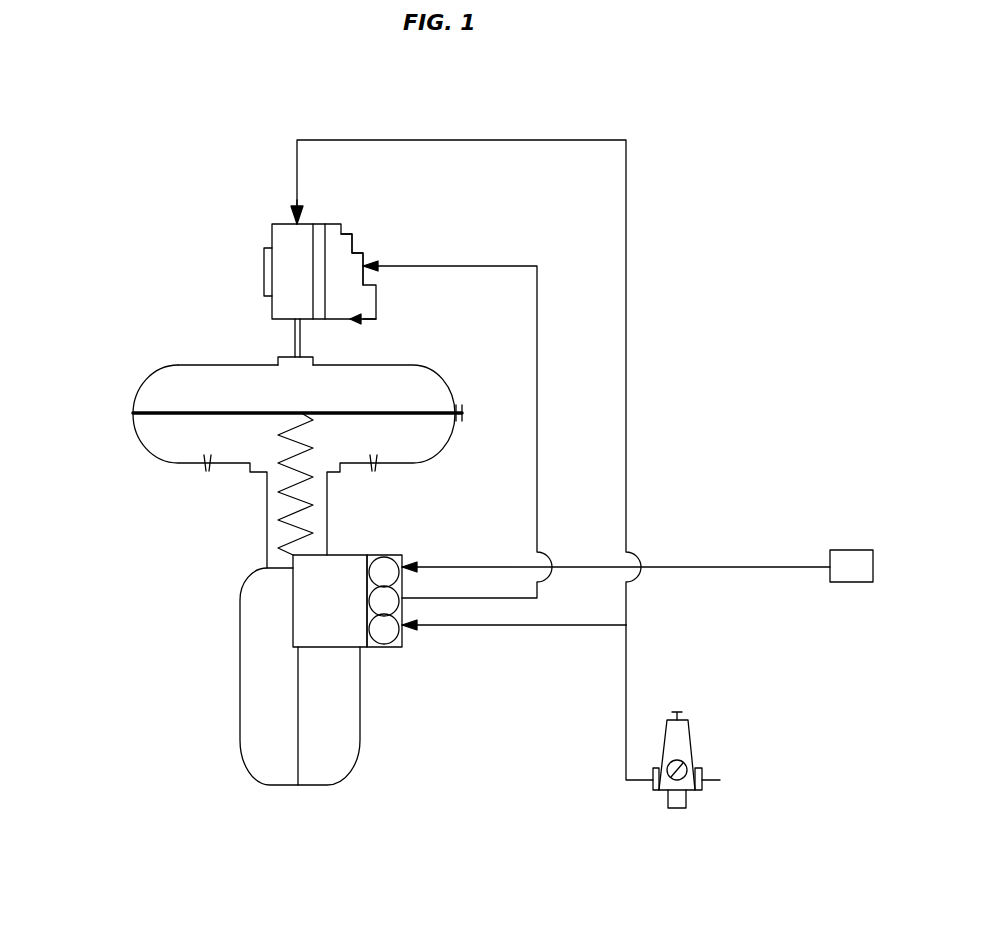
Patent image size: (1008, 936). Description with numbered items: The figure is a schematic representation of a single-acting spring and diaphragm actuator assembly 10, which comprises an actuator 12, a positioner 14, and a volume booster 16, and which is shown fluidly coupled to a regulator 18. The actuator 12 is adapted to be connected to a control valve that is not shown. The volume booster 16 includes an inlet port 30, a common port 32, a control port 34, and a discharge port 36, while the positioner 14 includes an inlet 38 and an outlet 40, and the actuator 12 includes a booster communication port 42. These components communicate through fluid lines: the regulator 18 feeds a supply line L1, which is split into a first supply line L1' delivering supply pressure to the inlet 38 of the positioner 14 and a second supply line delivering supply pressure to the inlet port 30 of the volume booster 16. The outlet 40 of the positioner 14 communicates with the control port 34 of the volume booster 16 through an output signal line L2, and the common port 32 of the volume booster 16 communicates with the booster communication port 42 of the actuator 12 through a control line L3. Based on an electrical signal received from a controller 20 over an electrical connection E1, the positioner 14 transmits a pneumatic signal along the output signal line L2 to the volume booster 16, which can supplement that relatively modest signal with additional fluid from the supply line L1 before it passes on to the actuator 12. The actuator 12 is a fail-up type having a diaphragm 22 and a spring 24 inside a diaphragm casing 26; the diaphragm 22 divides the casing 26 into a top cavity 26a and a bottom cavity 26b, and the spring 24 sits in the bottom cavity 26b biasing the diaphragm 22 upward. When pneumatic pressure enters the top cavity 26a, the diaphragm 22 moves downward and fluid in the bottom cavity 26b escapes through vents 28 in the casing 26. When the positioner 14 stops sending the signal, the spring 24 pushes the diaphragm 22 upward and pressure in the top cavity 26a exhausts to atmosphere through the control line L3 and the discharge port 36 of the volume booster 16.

The actuator assembly 10 is at (140, 198).
The actuator 12 is at (240, 611).
The positioner 14 is at (385, 637).
The volume booster 16 is at (324, 234).
The regulator 18 is at (690, 736).
The controller 20 is at (850, 585).
The diaphragm 22 is at (259, 450).
The spring 24 is at (287, 502).
The diaphragm casing 26 is at (133, 413).
The top cavity 26a is at (148, 385).
The bottom cavity 26b is at (148, 447).
The vents 28 is at (206, 468).
The inlet port 30 is at (293, 212).
The common port 32 is at (292, 318).
The control port 34 is at (366, 254).
The discharge port 36 is at (362, 320).
The inlet 38 is at (403, 632).
The outlet 40 is at (403, 590).
The booster communication port 42 is at (313, 358).
The supply line L1 is at (651, 702).
The first supply line L1' is at (514, 646).
The output signal line L2 is at (540, 484).
The control line L3 is at (292, 340).
The electrical connection E1 is at (725, 566).